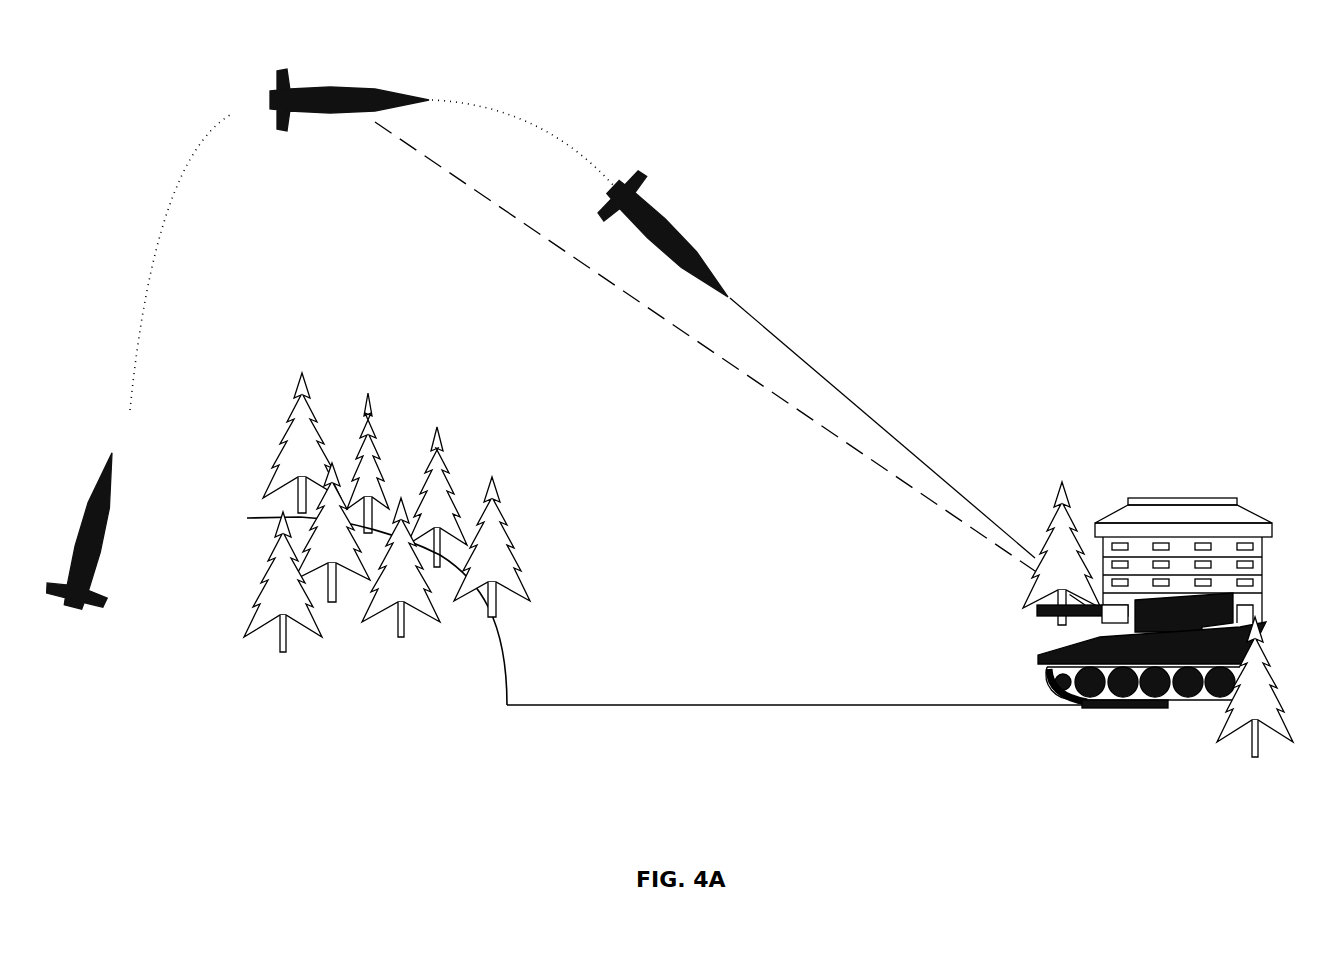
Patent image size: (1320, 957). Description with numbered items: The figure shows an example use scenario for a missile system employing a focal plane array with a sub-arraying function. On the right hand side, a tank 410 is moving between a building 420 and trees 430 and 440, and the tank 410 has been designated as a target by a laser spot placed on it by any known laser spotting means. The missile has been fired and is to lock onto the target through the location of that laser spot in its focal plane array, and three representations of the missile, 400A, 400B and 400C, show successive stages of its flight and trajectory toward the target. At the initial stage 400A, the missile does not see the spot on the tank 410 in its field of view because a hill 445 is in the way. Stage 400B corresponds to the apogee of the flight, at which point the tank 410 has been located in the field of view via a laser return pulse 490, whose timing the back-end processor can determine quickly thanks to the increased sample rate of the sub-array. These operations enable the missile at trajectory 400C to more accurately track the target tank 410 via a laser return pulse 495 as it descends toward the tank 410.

The missile at initial flight stage 400A is at (109, 529).
The missile at apogee stage 400B is at (349, 90).
The missile at terminal trajectory stage 400C is at (671, 242).
The tank 410 is at (1068, 687).
The building 420 is at (1169, 518).
The tree 430 is at (1063, 530).
The tree 440 is at (1255, 700).
The hill 445 is at (387, 539).
The laser return pulse 490 is at (730, 363).
The laser return pulse 495 is at (882, 428).